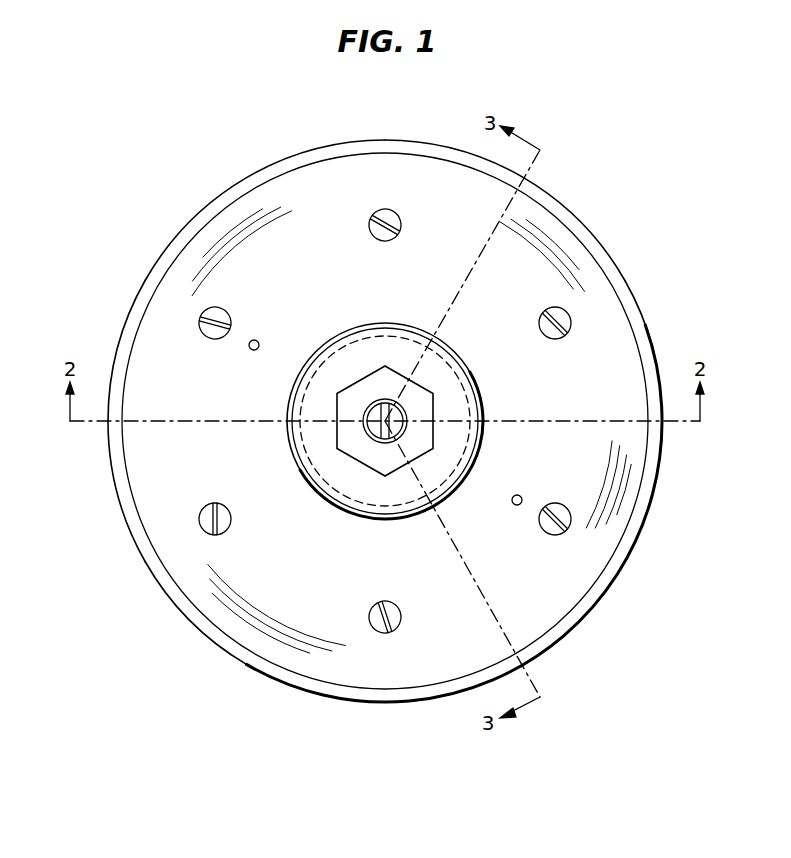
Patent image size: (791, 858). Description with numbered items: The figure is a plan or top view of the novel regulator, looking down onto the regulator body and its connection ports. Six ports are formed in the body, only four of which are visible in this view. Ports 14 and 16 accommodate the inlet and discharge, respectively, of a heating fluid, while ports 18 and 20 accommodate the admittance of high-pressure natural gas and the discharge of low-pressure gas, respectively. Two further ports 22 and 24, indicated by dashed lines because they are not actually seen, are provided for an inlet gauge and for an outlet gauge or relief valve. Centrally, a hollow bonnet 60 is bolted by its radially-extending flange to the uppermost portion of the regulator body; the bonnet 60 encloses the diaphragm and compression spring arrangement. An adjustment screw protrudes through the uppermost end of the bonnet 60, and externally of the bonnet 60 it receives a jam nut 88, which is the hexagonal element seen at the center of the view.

The port 14 is at (122, 518).
The port 16 is at (663, 483).
The port 18 is at (575, 633).
The port 20 is at (549, 188).
The port 22 is at (288, 156).
The port 24 is at (246, 667).
The hollow bonnet 60 is at (509, 335).
The jam nut 88 is at (389, 453).